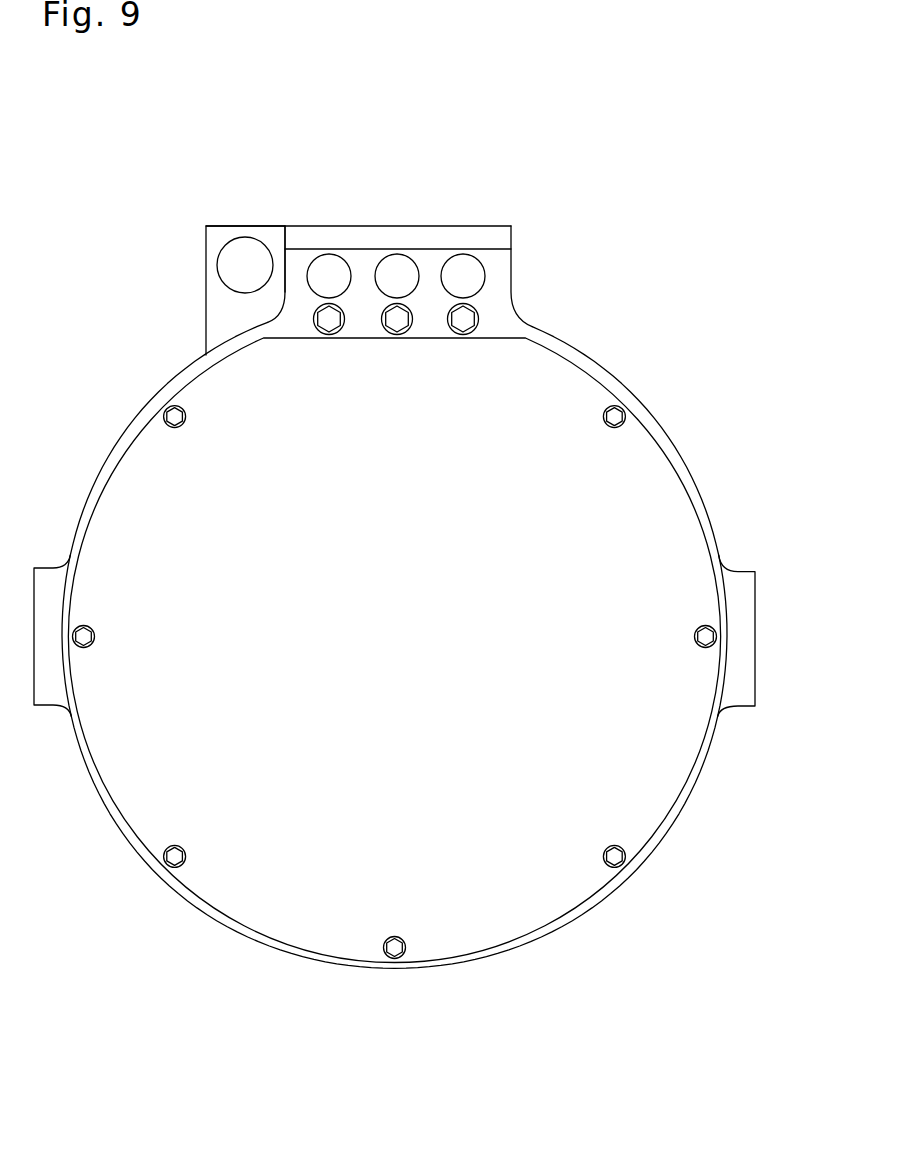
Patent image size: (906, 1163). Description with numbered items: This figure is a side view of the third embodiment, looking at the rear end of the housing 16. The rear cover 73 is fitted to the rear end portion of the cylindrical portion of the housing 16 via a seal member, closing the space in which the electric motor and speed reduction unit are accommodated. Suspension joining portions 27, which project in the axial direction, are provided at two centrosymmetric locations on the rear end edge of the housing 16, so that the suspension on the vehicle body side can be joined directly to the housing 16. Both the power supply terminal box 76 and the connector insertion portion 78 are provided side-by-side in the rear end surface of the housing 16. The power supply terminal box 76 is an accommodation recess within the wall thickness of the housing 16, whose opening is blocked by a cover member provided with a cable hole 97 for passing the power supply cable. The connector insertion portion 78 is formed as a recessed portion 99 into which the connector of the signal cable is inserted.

The housing 16 is at (624, 391).
The suspension joining portion 27 is at (52, 588).
The rear cover 73 is at (668, 795).
The power supply terminal box 76 is at (453, 236).
The connector insertion portion 78 is at (217, 236).
The cable hole 97 is at (478, 276).
The recessed portion 99 is at (240, 248).